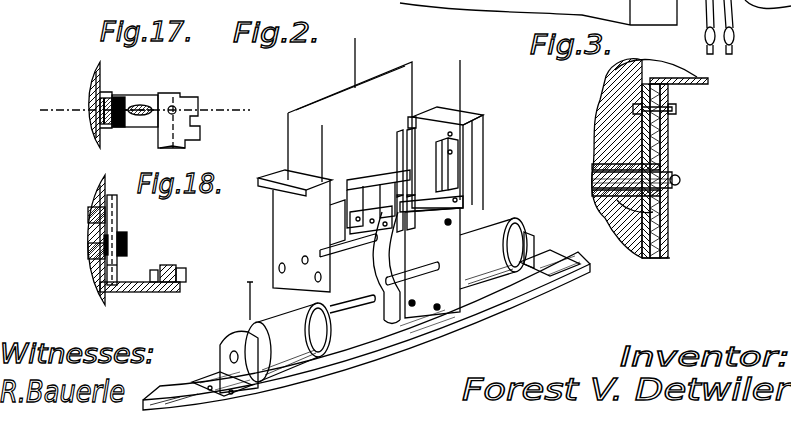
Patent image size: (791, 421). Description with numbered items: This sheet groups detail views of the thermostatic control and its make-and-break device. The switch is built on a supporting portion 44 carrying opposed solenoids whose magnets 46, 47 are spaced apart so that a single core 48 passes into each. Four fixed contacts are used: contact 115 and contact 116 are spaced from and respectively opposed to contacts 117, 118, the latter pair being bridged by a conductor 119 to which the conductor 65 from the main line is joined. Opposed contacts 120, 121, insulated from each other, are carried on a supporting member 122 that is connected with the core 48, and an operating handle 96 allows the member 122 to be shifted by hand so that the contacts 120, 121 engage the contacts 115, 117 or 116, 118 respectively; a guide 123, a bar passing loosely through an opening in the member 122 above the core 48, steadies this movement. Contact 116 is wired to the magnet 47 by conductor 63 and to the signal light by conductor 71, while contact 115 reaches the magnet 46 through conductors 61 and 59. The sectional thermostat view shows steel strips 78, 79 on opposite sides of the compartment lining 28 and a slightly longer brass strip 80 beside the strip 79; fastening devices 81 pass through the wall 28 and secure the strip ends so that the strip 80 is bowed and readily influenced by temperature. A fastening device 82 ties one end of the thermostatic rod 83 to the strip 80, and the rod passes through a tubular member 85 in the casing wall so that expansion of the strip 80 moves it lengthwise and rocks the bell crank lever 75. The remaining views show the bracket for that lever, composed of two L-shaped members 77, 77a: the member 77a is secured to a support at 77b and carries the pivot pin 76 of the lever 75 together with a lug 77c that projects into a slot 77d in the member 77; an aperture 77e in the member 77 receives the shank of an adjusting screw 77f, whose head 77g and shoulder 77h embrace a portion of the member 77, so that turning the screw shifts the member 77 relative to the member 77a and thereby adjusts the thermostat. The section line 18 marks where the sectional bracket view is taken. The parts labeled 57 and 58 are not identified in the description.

In FIG. 17, the section line 18 is at (67, 100).
In FIG. 3, the lining 28 is at (690, 84).
In FIG. 2, the supporting portion 44 is at (178, 395).
In FIG. 2, the magnet 46 is at (495, 282).
In FIG. 2, the magnet 47 is at (287, 362).
In FIG. 2, the core 48 is at (355, 314).
In FIG. 2, the roller bracket 57 is at (513, 242).
In FIG. 2, the roller bracket 58 is at (242, 347).
In FIG. 2, the conductor 59 is at (494, 200).
In FIG. 2, the conductor 61 is at (323, 132).
In FIG. 2, the conductor 63 is at (253, 287).
In FIG. 2, the conductor 65 is at (356, 78).
In FIG. 2, the conductor 71 is at (462, 96).
In FIG. 17, the bell crank lever 75 is at (188, 140).
In FIG. 18, the bell crank lever 75 is at (186, 277).
In FIG. 17, the pivot pin 76 is at (176, 104).
In FIG. 18, the pivot pin 76 is at (176, 270).
In FIG. 17, the bracket member 77 is at (141, 120).
In FIG. 18, the bracket member 77 is at (112, 284).
In FIG. 17, the bracket member 77a is at (97, 98).
In FIG. 18, the bracket member 77a is at (109, 292).
In FIG. 17, the fastening 77b is at (98, 106).
In FIG. 18, the fastening 77b is at (95, 210).
In FIG. 17, the pin or lug 77c is at (146, 105).
In FIG. 18, the pin or lug 77c is at (152, 268).
In FIG. 17, the slot 77d is at (122, 97).
In FIG. 18, the slot 77d is at (145, 293).
In FIG. 18, the aperture 77e is at (122, 232).
In FIG. 18, the adjusting screw 77f is at (92, 250).
In FIG. 17, the head 77g is at (108, 95).
In FIG. 18, the head 77g is at (118, 245).
In FIG. 17, the shoulder 77h is at (100, 130).
In FIG. 18, the shoulder 77h is at (100, 265).
In FIG. 3, the thermostat strip 78 is at (640, 258).
In FIG. 3, the thermostat strip 79 is at (660, 262).
In FIG. 3, the thermostat strip 80 is at (670, 246).
In FIG. 3, the fastening devices 81 is at (676, 112).
In FIG. 3, the fastening device 82 is at (692, 170).
In FIG. 3, the thermostatic rod 83 is at (598, 180).
In FIG. 3, the tubular member 85 is at (653, 212).
In FIG. 2, the operating handle 96 is at (408, 280).
In FIG. 2, the contact 115 is at (337, 224).
In FIG. 2, the contact 116 is at (462, 166).
In FIG. 2, the contact 117 is at (300, 178).
In FIG. 2, the contact 118 is at (410, 122).
In FIG. 2, the conductor 119 is at (304, 108).
In FIG. 2, the contact 120 is at (346, 182).
In FIG. 2, the contact 121 is at (384, 166).
In FIG. 2, the supporting member 122 is at (392, 324).
In FIG. 2, the guide 123 is at (323, 250).